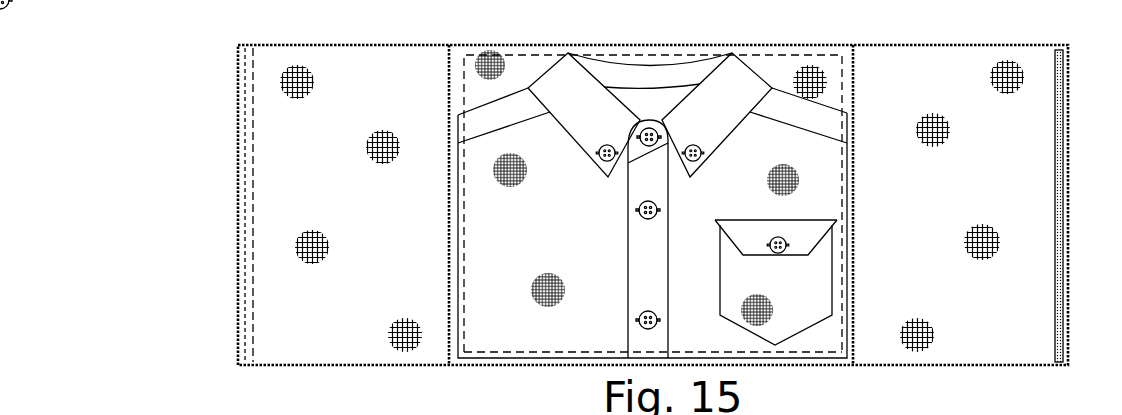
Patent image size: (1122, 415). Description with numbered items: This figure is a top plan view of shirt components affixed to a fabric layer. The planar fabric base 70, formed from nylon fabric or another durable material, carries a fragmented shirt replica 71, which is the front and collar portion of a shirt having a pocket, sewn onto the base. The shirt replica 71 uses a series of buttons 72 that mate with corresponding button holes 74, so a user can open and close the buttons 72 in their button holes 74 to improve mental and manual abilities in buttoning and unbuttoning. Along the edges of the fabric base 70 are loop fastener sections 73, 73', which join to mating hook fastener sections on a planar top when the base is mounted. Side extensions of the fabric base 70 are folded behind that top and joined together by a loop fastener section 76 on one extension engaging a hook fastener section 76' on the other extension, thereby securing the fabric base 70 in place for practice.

The planar fabric base 70 is at (268, 124).
The fragmented shirt replica 71 is at (830, 161).
The buttons 72 is at (652, 127).
The loop fastener section 73 is at (653, 203).
The loop fastener section 73' is at (653, 330).
The button holes 74 is at (638, 213).
The loop fastener section 76 is at (219, 205).
The hook fastener section 76' is at (1086, 206).